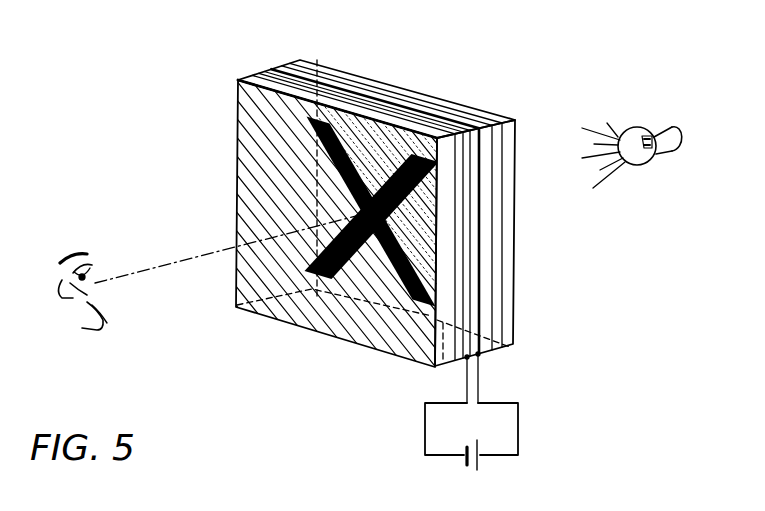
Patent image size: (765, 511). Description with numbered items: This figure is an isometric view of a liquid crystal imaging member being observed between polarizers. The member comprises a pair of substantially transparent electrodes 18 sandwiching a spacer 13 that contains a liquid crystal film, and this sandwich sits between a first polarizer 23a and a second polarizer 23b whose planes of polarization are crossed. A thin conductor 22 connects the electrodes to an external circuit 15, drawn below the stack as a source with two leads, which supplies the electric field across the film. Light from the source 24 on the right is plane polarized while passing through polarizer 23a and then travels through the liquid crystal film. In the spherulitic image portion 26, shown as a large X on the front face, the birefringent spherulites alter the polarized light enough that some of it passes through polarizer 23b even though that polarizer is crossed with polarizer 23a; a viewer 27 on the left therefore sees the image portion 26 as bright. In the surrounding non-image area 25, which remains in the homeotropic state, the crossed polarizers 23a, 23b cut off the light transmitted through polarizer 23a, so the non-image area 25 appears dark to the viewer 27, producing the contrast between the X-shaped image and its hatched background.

The spacer 13 is at (281, 71).
The substantially transparent electrodes 18 is at (285, 70).
The polarizer 23a is at (390, 84).
The polarizer 23b is at (238, 80).
The non-image area 25 is at (288, 201).
The spherulitic image portion 26 is at (318, 268).
The viewer 27 is at (54, 280).
The conductor 22 is at (433, 368).
The external circuit 15 is at (526, 432).
The light source 24 is at (658, 128).